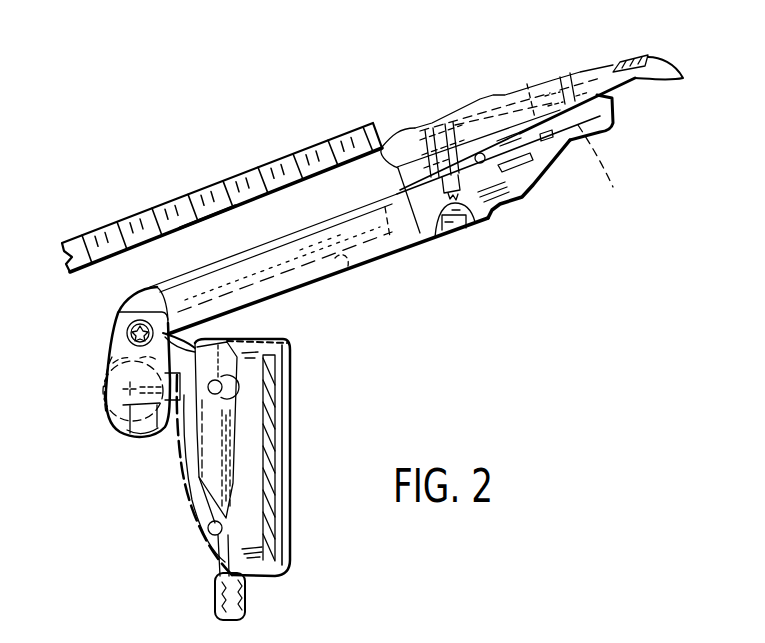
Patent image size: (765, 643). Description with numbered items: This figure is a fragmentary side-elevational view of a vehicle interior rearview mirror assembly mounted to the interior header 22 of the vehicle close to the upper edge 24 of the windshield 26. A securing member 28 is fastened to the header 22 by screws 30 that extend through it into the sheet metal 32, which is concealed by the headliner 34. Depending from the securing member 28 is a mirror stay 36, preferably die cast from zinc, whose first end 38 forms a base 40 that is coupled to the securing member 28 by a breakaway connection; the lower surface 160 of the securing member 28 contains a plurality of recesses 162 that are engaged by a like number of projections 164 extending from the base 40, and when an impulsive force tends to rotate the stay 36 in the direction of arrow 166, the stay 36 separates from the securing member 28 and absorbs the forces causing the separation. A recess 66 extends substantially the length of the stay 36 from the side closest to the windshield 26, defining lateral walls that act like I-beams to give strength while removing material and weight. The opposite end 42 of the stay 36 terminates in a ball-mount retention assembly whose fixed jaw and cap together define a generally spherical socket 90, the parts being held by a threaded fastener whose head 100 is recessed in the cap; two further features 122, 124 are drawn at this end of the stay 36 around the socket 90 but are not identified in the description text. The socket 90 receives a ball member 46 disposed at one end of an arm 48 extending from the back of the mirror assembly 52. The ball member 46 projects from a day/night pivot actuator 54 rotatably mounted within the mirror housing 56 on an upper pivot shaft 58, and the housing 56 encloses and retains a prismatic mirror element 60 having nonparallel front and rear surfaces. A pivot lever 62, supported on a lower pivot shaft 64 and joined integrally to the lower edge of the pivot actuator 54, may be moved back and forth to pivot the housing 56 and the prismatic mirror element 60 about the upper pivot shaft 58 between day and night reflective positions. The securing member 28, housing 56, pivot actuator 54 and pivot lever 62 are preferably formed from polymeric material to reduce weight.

The interior header 22 is at (637, 105).
The upper edge 24 is at (377, 153).
The windshield 26 is at (243, 180).
The securing member 28 is at (600, 130).
The screws 30 is at (608, 164).
The sheet metal 32 is at (619, 63).
The headliner 34 is at (637, 92).
The mirror stay 36 is at (388, 251).
The first end 38 is at (561, 177).
The base 40 is at (533, 182).
The opposite end 42 is at (133, 296).
The ball member 46 is at (103, 393).
The arm 48 is at (224, 326).
The mirror assembly 52 is at (306, 381).
The day/night pivot actuator 54 is at (206, 486).
The mirror housing 56 is at (288, 431).
The upper pivot shaft 58 is at (224, 393).
The prismatic mirror element 60 is at (280, 464).
The pivot lever 62 is at (248, 601).
The lower pivot shaft 64 is at (208, 531).
The recess 66 is at (347, 262).
The socket 90 is at (117, 360).
The head 100 is at (121, 331).
The lower boss 122 is at (110, 427).
The upper boss 124 is at (103, 368).
The lower surface 160 is at (432, 243).
The recesses 162 is at (496, 118).
The projections 164 is at (476, 154).
The arrow 166 is at (203, 226).